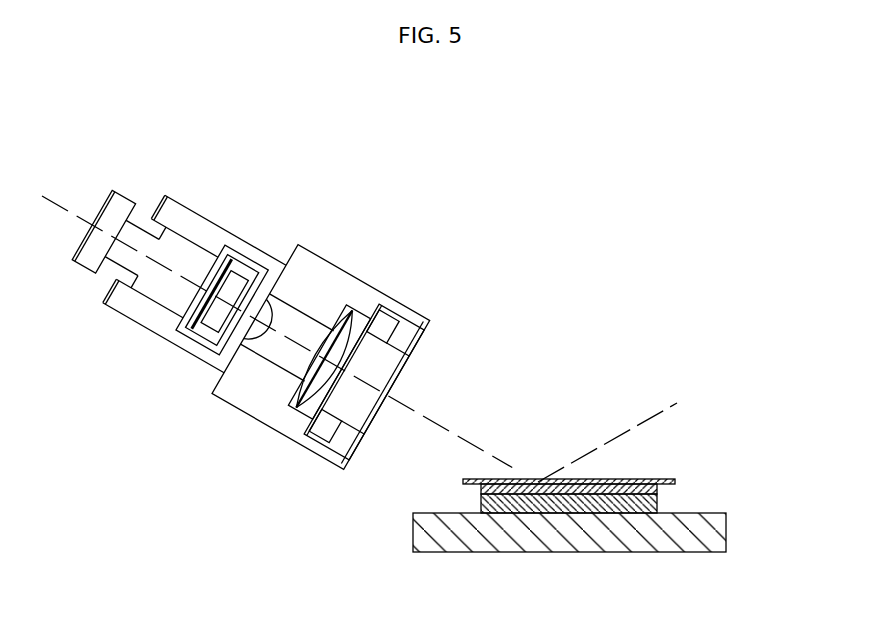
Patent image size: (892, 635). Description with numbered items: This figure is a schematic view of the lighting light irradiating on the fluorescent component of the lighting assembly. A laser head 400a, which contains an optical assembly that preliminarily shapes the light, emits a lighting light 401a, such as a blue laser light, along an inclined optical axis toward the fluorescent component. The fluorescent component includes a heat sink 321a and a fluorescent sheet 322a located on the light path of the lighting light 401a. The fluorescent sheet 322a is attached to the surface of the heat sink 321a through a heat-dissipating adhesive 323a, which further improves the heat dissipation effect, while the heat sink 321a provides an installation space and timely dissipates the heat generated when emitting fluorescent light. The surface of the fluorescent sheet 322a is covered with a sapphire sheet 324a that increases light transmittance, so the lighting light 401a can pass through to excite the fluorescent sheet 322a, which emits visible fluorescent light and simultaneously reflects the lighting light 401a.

The laser head 400a is at (210, 230).
The lighting light 401a is at (463, 435).
The heat sink 321a is at (705, 535).
The fluorescent sheet 322a is at (657, 490).
The heat-dissipating adhesive 323a is at (657, 507).
The sapphire sheet 324a is at (675, 481).